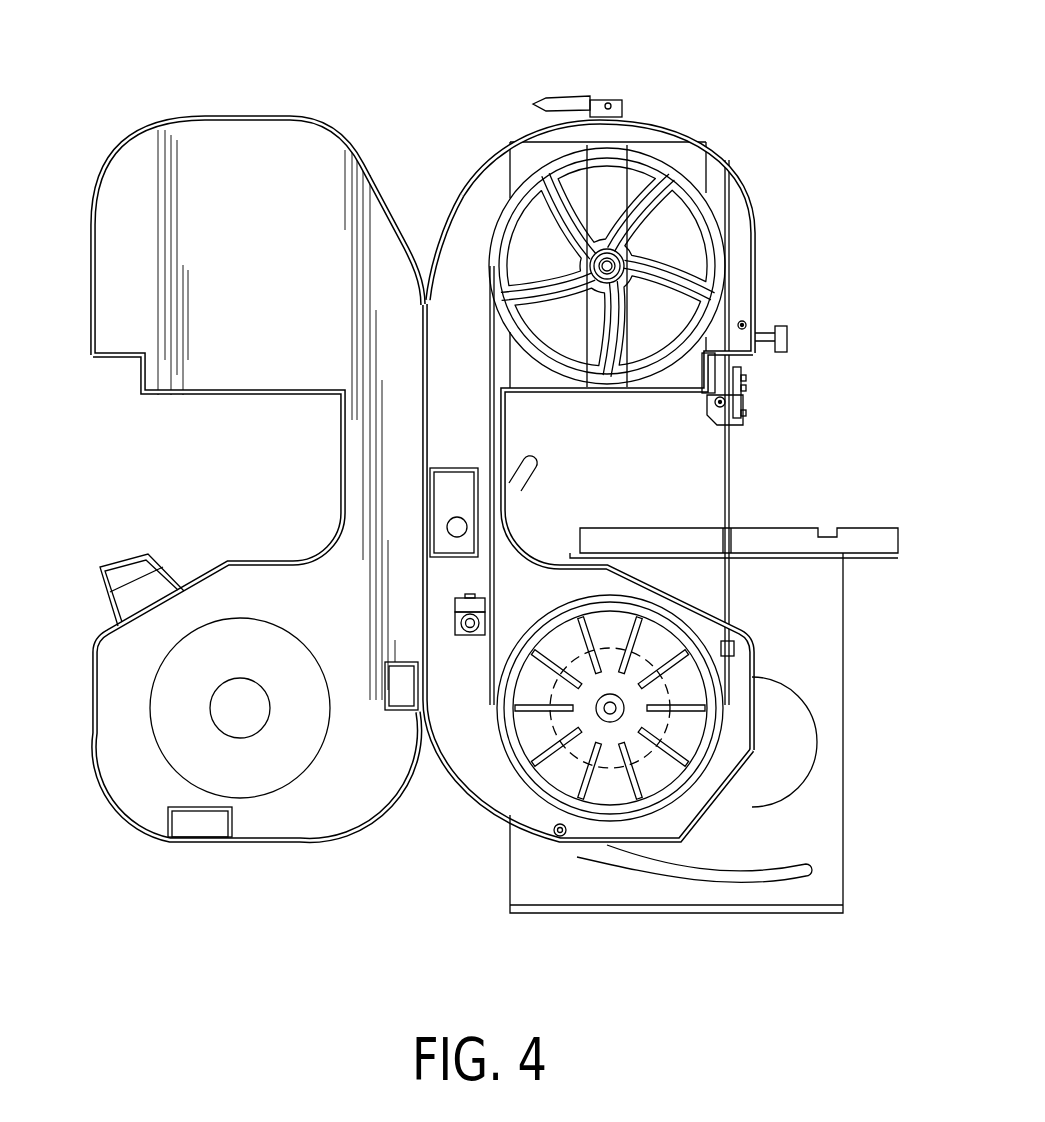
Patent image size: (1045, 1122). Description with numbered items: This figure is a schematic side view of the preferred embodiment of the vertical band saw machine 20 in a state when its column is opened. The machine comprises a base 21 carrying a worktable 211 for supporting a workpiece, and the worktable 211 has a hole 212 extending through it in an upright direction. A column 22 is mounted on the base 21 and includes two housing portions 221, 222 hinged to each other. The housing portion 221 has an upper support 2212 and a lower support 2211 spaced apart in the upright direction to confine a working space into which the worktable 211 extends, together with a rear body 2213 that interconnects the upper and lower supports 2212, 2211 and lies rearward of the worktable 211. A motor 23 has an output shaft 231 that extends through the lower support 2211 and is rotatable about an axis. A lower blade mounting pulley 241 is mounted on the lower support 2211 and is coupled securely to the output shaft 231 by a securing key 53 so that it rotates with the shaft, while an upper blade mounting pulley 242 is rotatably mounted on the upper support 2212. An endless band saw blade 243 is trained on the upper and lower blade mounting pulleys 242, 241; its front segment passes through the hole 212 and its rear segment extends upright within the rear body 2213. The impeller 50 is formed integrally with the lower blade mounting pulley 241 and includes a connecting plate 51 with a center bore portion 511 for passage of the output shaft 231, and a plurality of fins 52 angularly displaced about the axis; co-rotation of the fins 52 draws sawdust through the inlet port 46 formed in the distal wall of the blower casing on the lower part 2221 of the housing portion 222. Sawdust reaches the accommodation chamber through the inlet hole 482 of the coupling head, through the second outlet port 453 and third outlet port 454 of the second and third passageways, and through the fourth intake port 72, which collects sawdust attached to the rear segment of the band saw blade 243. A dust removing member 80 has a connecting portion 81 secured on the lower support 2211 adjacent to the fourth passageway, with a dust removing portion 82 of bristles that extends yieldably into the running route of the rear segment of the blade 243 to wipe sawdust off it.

The vertical band saw machine 20 is at (852, 860).
The base 21 is at (843, 660).
The worktable 211 is at (865, 527).
The hole 212 is at (727, 538).
The column 22 is at (720, 148).
The housing portion 221 is at (523, 132).
The lower support 2211 is at (522, 808).
The upper support 2212 is at (497, 160).
The rear body 2213 is at (453, 413).
The housing portion 222 is at (162, 125).
The lower part 2221 is at (102, 696).
The motor 23 is at (690, 688).
The output shaft 231 is at (742, 806).
The lower blade mounting pulley 241 is at (512, 776).
The upper blade mounting pulley 242 is at (705, 223).
The endless band saw blade 243 is at (728, 445).
The inlet port 46 is at (281, 785).
The second outlet port 453 is at (132, 567).
The third outlet port 454 is at (195, 827).
The inlet hole 482 is at (238, 736).
The impeller 50 is at (656, 780).
The connecting plate 51 is at (612, 800).
The center bore portion 511 is at (652, 750).
The fins 52 is at (623, 708).
The securing key 53 is at (612, 705).
The fourth intake port 72 is at (398, 712).
The dust removing member 80 is at (369, 653).
The connecting portion 81 is at (455, 623).
The dust removing portion 82 is at (455, 603).